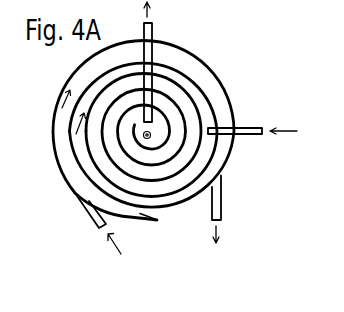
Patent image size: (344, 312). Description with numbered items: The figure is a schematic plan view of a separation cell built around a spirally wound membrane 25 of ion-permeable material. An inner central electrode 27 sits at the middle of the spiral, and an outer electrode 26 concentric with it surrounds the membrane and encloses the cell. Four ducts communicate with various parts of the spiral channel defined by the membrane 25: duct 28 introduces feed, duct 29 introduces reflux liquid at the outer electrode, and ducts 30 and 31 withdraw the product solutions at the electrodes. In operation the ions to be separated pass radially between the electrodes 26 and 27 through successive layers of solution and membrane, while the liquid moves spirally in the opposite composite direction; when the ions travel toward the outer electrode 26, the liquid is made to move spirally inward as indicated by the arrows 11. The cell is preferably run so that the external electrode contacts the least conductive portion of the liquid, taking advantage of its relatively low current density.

The arrows 11 is at (64, 118).
The spirally wound membrane 25 is at (72, 153).
The outer electrode 26 is at (53, 128).
The inner central electrode 27 is at (150, 133).
The duct 28 is at (245, 134).
The duct 29 is at (90, 216).
The duct 30 is at (222, 207).
The duct 31 is at (152, 33).